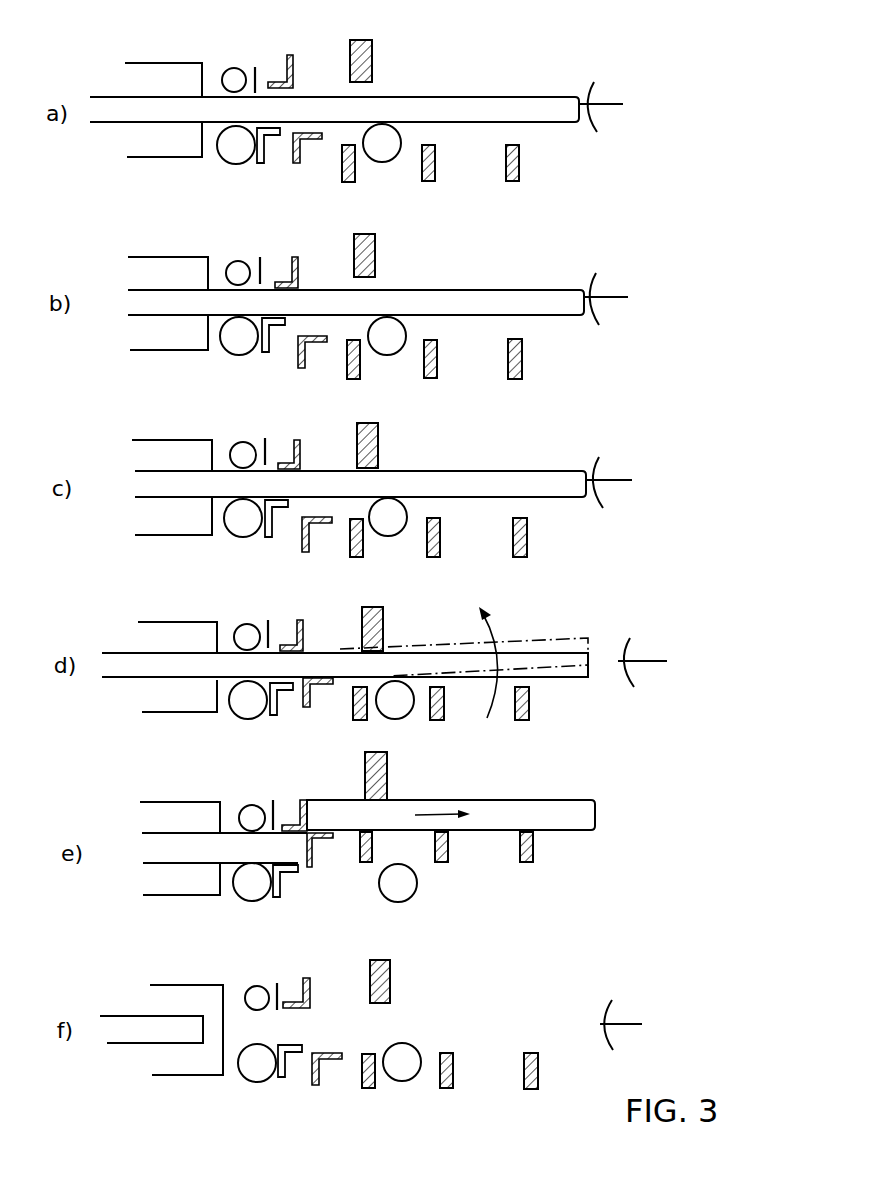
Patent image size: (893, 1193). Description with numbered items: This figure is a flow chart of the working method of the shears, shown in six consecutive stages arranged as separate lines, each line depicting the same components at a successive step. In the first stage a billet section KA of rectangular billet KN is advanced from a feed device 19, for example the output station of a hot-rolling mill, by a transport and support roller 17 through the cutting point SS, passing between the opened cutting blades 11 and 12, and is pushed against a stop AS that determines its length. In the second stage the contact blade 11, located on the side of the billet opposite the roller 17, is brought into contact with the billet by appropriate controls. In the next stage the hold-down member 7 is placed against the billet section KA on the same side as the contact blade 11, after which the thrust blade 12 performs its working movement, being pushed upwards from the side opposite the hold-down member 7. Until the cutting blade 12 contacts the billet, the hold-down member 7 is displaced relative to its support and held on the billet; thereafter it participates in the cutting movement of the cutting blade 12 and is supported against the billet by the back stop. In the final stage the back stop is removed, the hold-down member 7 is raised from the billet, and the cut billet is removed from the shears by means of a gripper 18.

The hold-down member 7 is at (362, 53).
The first cutting blade (contact blade) 11 is at (285, 75).
The second cutting blade (thrust blade) 12 is at (304, 147).
The transport and support roller 17 is at (228, 138).
The gripper 18 is at (350, 180).
The feed device 19 is at (158, 75).
The billet section KA is at (472, 102).
The billet KN is at (108, 115).
The cutting point SS is at (300, 88).
The stop AS is at (605, 100).